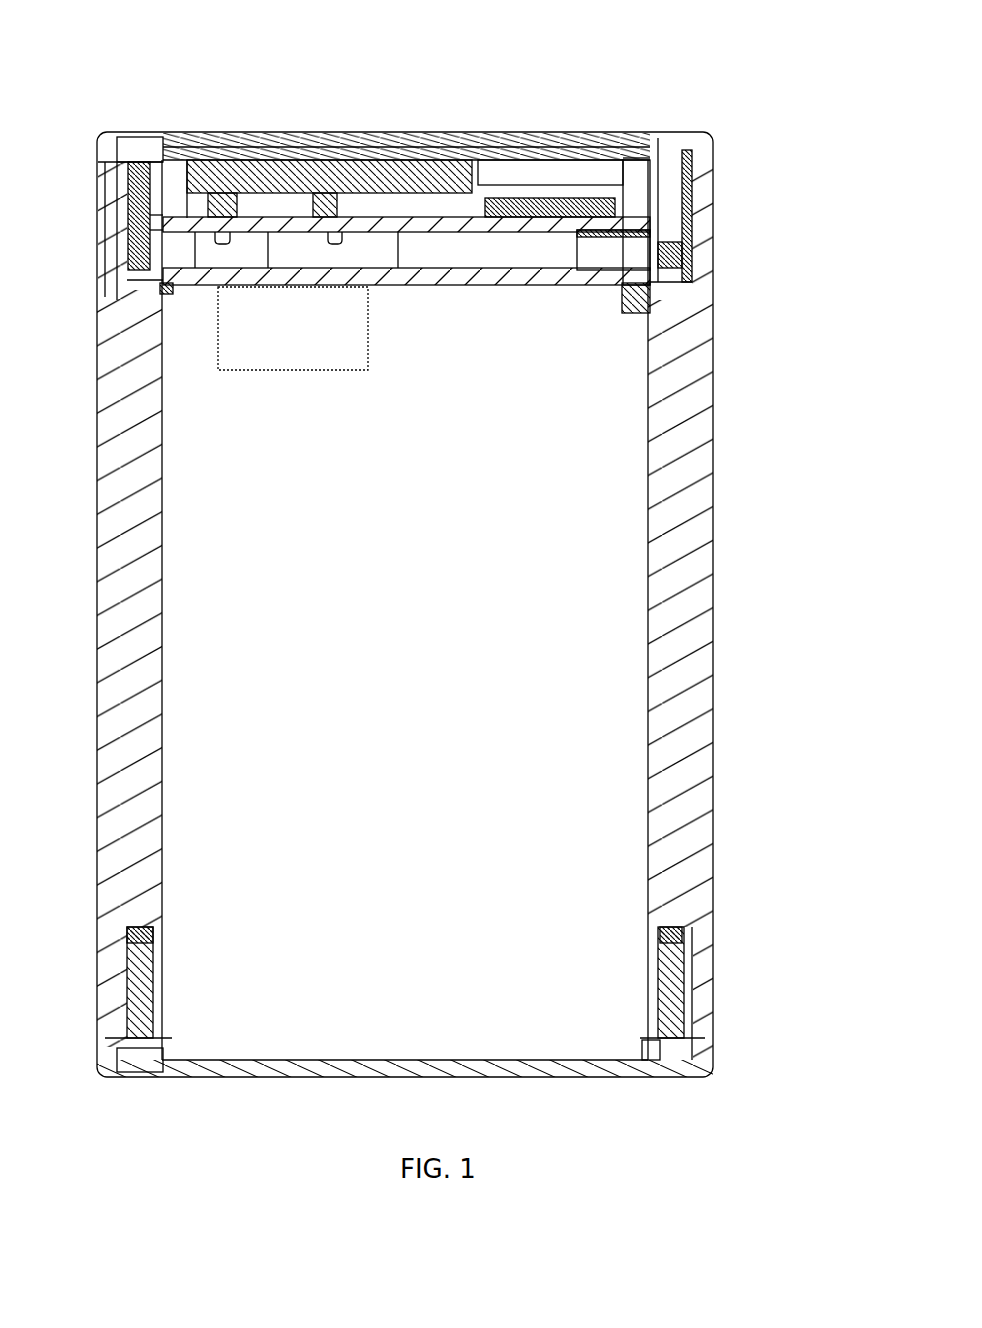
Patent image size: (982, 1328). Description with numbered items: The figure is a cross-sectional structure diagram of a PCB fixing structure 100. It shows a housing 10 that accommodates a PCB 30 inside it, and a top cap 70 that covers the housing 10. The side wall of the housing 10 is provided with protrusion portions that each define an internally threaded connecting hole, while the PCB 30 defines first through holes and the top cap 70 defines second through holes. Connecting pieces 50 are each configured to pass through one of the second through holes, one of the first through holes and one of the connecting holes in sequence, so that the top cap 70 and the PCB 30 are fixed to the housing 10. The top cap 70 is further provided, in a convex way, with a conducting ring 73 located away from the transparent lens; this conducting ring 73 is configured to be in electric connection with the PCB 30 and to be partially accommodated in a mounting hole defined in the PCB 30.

The PCB fixing structure 100 is at (378, 92).
The housing 10 is at (687, 560).
The PCB 30 is at (547, 263).
The connecting piece 50 is at (675, 152).
The top cap 70 is at (190, 133).
The conducting ring 73 is at (563, 187).